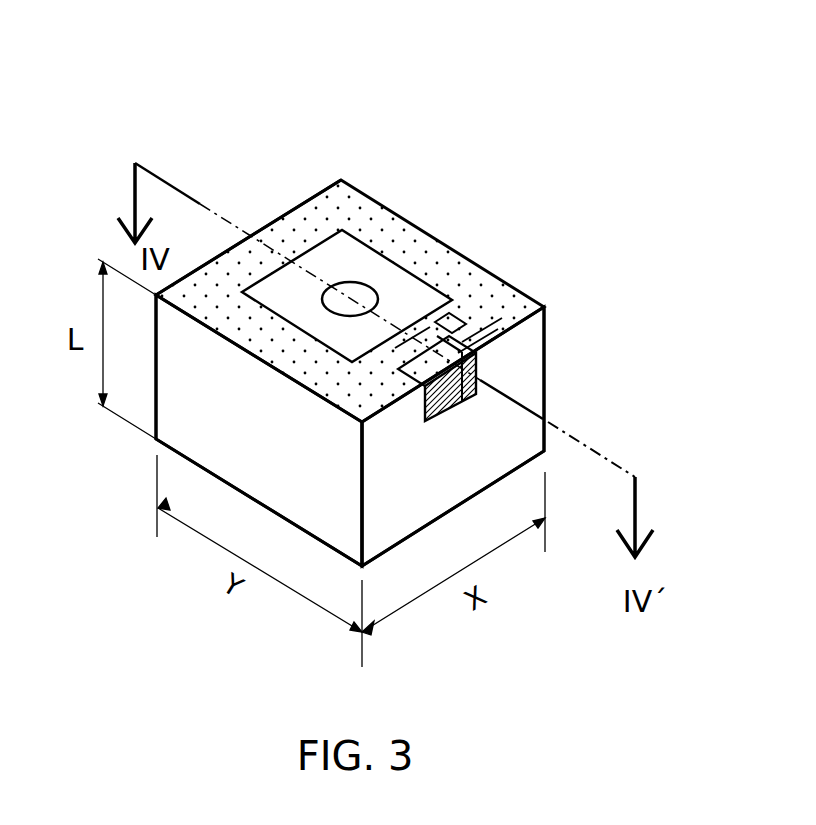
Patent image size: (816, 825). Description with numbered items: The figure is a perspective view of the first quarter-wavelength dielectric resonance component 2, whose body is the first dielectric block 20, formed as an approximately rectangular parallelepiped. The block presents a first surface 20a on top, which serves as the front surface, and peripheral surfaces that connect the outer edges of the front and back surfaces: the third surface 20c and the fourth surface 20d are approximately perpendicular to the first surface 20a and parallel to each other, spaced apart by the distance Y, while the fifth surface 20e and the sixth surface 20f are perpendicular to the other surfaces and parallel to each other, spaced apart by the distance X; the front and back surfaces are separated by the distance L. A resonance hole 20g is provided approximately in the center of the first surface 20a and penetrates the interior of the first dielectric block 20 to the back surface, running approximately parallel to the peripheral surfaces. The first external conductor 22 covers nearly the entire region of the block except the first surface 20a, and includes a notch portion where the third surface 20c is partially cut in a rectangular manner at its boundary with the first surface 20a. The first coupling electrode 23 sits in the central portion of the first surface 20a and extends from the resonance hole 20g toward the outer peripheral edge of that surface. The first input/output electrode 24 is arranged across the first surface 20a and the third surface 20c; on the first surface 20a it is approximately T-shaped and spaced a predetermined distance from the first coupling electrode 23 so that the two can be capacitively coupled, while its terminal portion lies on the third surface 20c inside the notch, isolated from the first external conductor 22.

The first ¼ wavelength dielectric resonance component 2 is at (513, 156).
The first dielectric block 20 is at (380, 222).
The first surface 20a is at (417, 240).
The third surface 20c is at (518, 376).
The fourth surface 20d is at (292, 210).
The fifth surface 20e is at (185, 421).
The sixth surface 20f is at (395, 288).
The resonance hole 20g is at (347, 282).
The first external conductor 22 is at (528, 340).
The first coupling electrode 23 is at (462, 318).
The first input/output electrode 24 is at (475, 352).